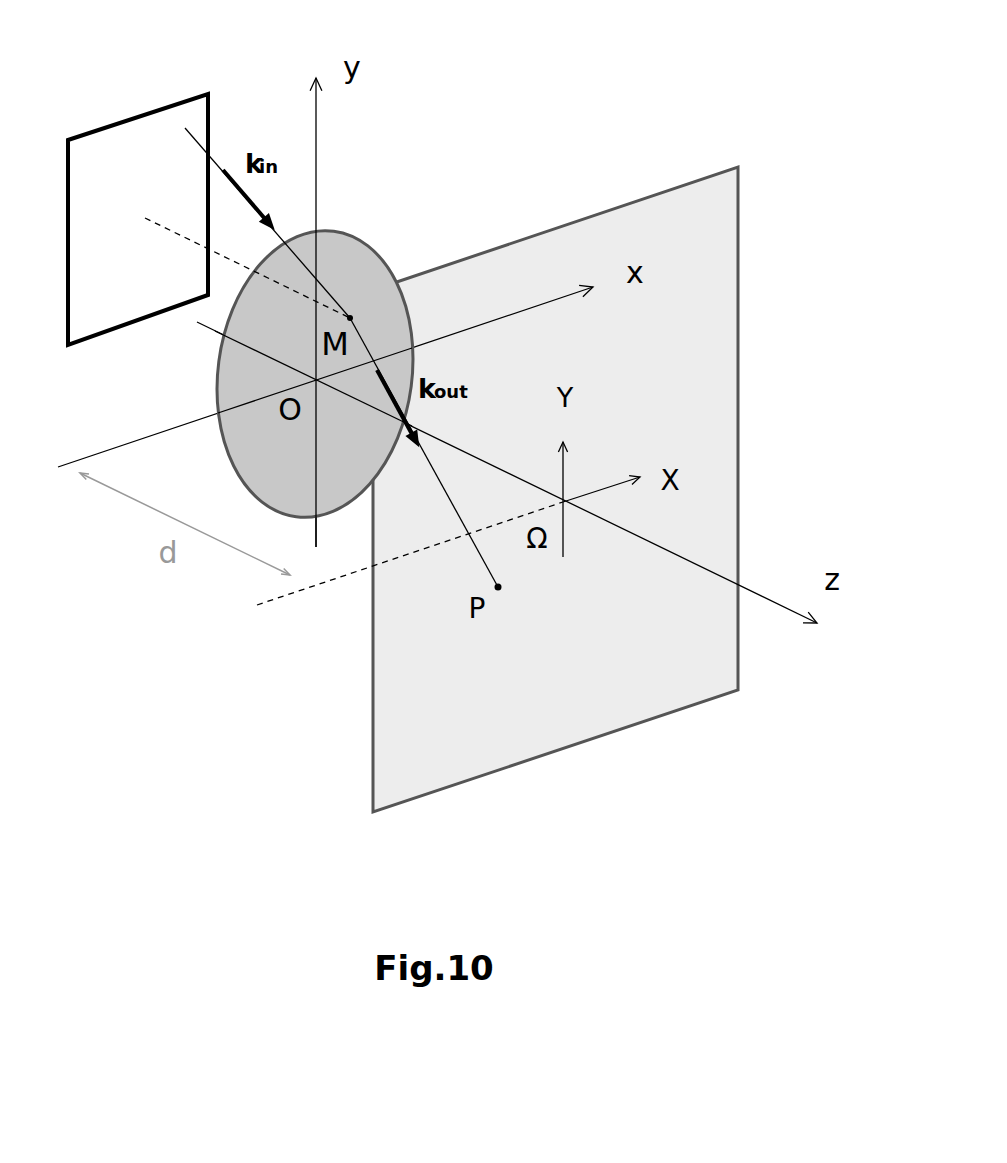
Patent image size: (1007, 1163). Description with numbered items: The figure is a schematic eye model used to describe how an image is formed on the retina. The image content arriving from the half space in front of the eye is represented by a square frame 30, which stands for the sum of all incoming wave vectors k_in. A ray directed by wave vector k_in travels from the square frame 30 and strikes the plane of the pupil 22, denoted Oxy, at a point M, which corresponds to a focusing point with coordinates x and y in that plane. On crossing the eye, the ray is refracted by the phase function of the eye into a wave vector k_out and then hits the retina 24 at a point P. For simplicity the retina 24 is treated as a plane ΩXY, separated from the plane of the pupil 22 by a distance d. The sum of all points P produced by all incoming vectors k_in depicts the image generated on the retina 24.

The square frame 30 is at (130, 112).
The pupil 22 is at (375, 237).
The retina 24 is at (740, 227).